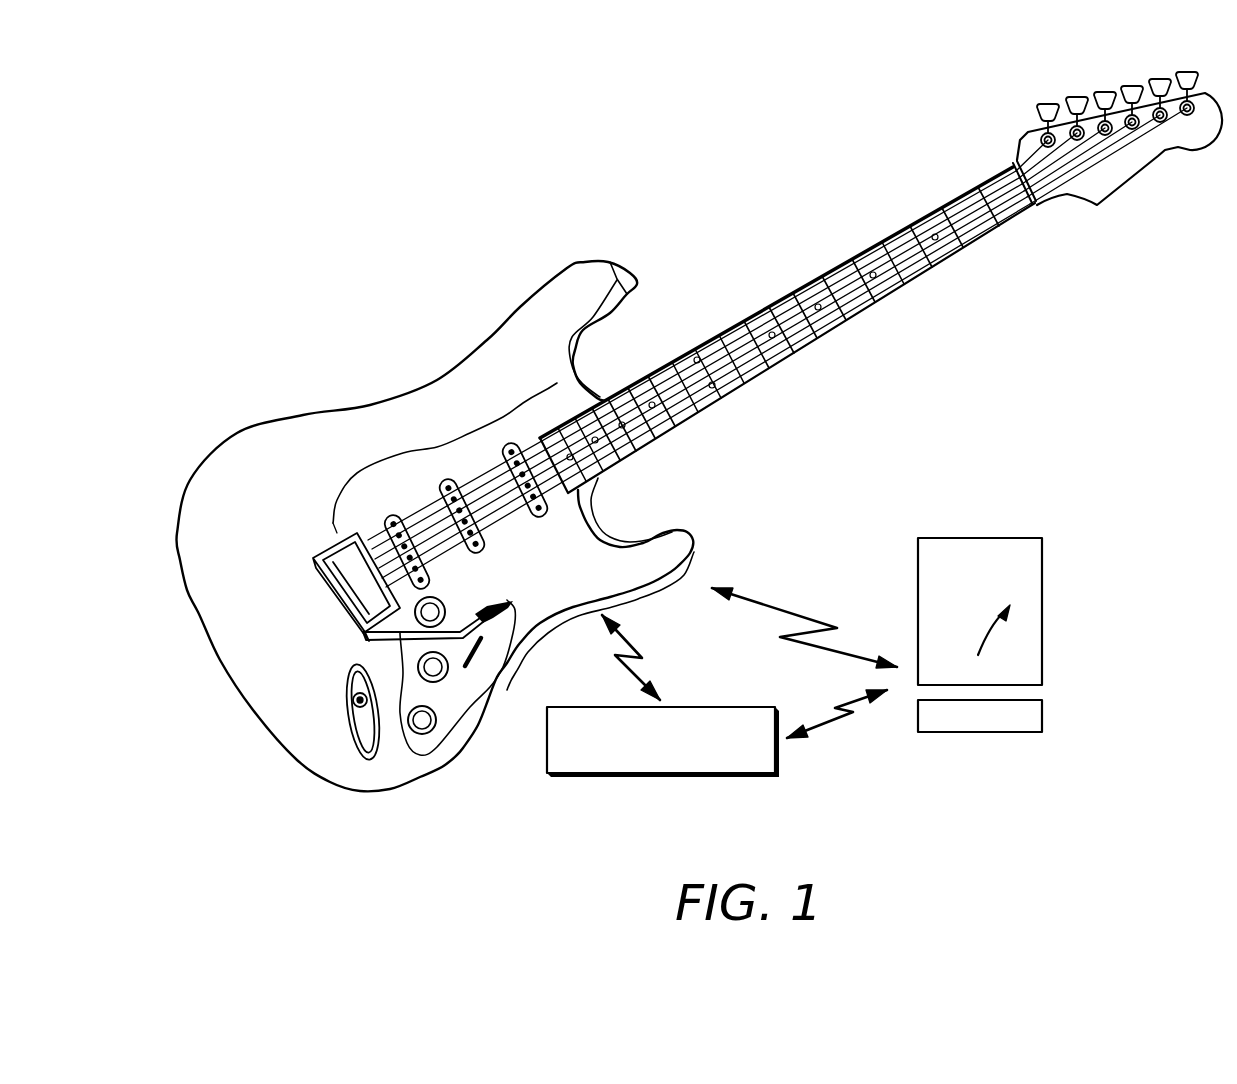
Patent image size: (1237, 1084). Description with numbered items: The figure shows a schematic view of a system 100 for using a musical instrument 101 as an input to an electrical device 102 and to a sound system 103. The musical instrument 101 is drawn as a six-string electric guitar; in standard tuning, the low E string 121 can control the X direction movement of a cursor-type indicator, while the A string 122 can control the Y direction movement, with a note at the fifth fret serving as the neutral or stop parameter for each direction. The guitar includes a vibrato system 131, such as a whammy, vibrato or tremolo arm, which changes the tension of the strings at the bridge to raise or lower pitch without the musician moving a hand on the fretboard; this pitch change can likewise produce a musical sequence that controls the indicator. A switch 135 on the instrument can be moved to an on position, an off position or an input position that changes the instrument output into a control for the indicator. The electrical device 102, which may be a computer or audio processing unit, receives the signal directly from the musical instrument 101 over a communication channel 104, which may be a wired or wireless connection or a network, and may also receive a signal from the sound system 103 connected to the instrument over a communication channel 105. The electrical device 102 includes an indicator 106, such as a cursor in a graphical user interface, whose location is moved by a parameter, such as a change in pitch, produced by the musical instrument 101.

The system 100 is at (371, 304).
The musical instrument 101 is at (600, 260).
The electrical device 102 is at (980, 538).
The sound system 103 is at (778, 763).
The communication channel 104 is at (778, 605).
The communication channel 105 is at (822, 723).
The indicator 106 is at (990, 643).
The low E string 121 is at (517, 448).
The A string 122 is at (990, 185).
The vibrato system 131 is at (495, 618).
The switch 135 is at (472, 660).